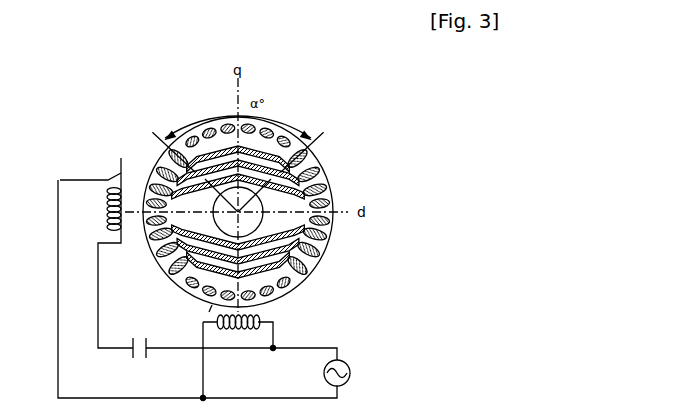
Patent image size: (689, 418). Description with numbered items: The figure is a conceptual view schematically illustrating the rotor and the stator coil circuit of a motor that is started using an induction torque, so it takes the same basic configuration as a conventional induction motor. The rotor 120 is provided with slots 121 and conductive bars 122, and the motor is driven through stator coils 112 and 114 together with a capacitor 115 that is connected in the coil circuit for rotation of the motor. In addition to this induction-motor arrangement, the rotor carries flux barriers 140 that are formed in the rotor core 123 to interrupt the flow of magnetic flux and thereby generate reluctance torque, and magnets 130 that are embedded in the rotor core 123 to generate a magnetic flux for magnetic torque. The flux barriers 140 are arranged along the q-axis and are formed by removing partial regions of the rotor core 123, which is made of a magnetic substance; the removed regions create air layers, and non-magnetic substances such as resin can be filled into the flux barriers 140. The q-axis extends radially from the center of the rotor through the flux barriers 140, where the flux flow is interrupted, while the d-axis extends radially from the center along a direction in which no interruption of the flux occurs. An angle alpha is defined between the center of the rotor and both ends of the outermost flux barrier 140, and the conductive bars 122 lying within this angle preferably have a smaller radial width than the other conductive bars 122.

The rotor 120 is at (343, 105).
The slots 121 is at (327, 173).
The conductive bars 122 is at (333, 223).
The rotor core 123 is at (287, 199).
The flux barriers 140 is at (322, 255).
The magnets 130 is at (293, 281).
The stator coil 112 is at (258, 313).
The stator coil 114 is at (123, 186).
The capacitor 115 is at (135, 337).